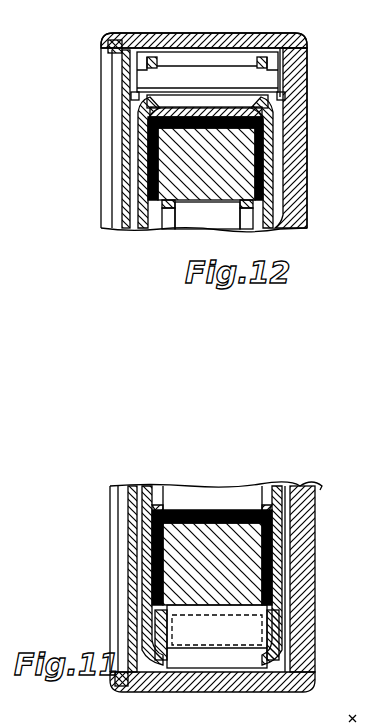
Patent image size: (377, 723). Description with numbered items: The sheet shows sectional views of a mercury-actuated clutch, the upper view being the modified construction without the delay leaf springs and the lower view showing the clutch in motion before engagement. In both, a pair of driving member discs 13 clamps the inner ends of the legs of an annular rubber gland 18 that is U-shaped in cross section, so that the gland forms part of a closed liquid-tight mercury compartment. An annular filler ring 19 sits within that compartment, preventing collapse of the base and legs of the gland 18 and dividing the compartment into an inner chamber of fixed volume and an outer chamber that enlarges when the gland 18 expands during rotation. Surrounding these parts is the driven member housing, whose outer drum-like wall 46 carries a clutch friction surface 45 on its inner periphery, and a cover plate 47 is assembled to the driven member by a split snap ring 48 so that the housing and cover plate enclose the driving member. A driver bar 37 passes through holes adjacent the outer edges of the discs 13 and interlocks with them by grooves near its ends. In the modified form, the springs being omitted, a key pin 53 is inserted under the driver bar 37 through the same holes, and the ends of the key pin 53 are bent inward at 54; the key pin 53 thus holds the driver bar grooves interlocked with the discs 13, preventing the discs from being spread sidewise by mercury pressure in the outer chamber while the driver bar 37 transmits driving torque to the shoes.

In FIG. 12, the disc 13 is at (142, 148).
In FIG. 11, the disc 13 is at (143, 535).
In FIG. 12, the rubber gland 18 is at (281, 147).
In FIG. 11, the rubber gland 18 is at (282, 578).
In FIG. 12, the filler ring 19 is at (220, 177).
In FIG. 11, the filler ring 19 is at (225, 564).
In FIG. 12, the driver bar 37 is at (300, 52).
In FIG. 12, the clutch friction surface 45 is at (203, 48).
In FIG. 12, the outer drum-like wall 46 is at (172, 36).
In FIG. 11, the outer drum-like wall 46 is at (228, 680).
In FIG. 11, the cover plate 47 is at (128, 586).
In FIG. 12, the split snap ring 48 is at (108, 49).
In FIG. 11, the split snap ring 48 is at (114, 683).
In FIG. 12, the key pin 53 is at (228, 90).
In FIG. 12, the bent inward ends 54 is at (133, 97).